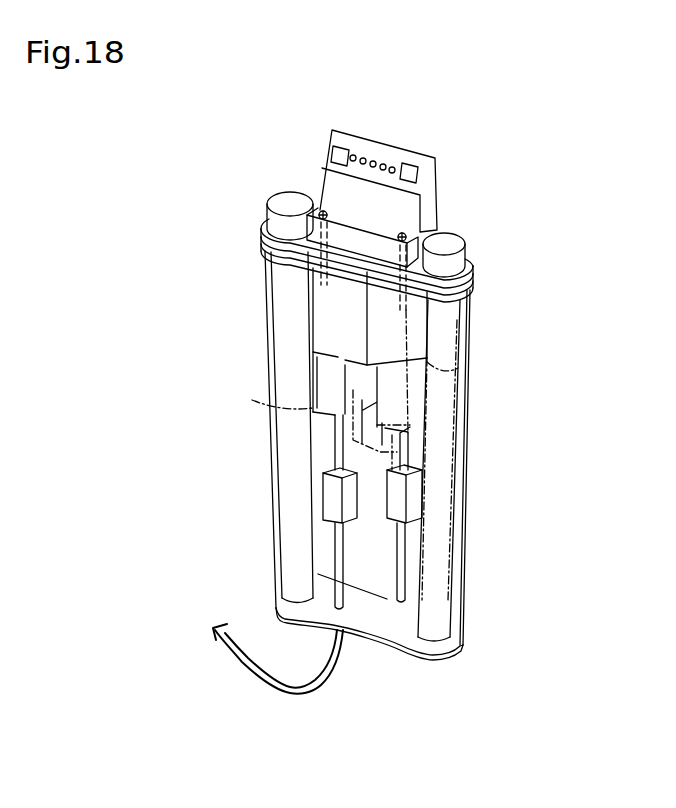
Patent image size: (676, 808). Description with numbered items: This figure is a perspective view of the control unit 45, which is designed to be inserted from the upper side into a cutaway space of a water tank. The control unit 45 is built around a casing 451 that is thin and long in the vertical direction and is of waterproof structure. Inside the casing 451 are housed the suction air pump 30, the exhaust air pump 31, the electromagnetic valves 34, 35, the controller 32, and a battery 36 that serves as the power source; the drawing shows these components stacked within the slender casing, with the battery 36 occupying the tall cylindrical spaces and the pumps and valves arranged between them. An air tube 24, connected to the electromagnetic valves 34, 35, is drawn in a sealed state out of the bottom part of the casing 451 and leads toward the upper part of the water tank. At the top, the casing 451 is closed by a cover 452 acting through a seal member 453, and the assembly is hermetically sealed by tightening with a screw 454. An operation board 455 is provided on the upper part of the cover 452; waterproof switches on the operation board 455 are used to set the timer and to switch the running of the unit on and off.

The air tube 24 is at (283, 696).
The suction air pump 30 is at (400, 393).
The exhaust air pump 31 is at (337, 370).
The controller 32 is at (327, 317).
The electromagnetic valve 34 is at (387, 507).
The electromagnetic valve 35 is at (333, 500).
The battery 36 is at (287, 272).
The control unit 45 is at (478, 239).
The casing 451 is at (470, 340).
The cover 452 is at (466, 247).
The seal member 453 is at (477, 293).
The screw 454 is at (404, 237).
The operation board 455 is at (328, 150).